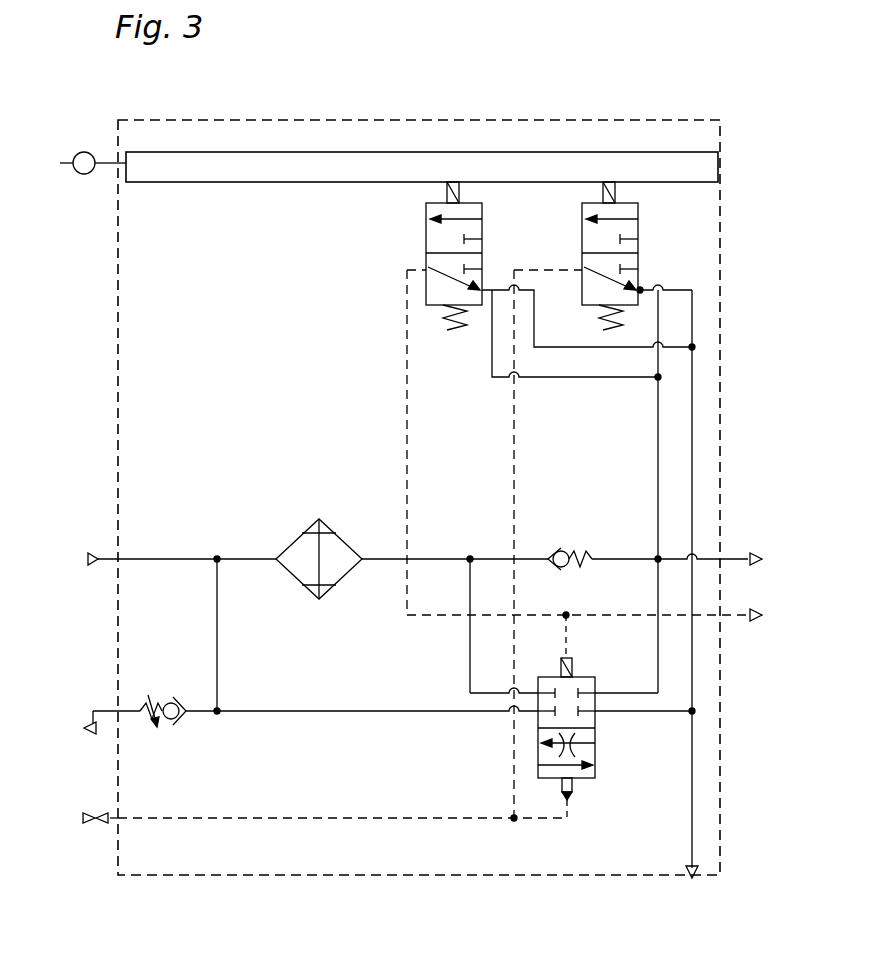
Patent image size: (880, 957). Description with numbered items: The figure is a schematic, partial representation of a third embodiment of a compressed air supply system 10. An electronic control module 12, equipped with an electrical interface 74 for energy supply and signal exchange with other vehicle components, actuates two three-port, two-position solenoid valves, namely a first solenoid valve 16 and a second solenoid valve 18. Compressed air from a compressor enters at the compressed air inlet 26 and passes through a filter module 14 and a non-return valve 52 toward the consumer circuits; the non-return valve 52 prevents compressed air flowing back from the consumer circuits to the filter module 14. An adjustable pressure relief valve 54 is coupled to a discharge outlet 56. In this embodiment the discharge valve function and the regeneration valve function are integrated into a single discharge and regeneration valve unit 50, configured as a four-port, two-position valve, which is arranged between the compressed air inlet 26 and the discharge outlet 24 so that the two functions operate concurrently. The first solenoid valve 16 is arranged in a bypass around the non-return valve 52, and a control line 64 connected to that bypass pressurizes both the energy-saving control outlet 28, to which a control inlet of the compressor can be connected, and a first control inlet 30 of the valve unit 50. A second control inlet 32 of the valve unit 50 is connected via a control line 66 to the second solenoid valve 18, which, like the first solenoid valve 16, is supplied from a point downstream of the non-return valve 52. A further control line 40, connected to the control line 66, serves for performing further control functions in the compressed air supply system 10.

The compressed air supply system 10 is at (437, 117).
The electronic control module 12 is at (290, 185).
The filter module 14 is at (300, 592).
The first solenoid valve 16 is at (640, 231).
The second solenoid valve 18 is at (426, 237).
The discharge outlet 24 is at (700, 881).
The compressed air inlet 26 is at (90, 553).
The energy-saving control outlet 28 is at (85, 826).
The first control inlet 30 is at (573, 795).
The second control inlet 32 is at (573, 668).
The further control line 40 is at (597, 612).
The discharge and regeneration valve unit 50 is at (598, 780).
The non-return valve 52 is at (556, 551).
The adjustable pressure relief valve 54 is at (176, 720).
The discharge outlet 56 is at (84, 736).
The control line 64 is at (517, 428).
The control line 66 is at (405, 440).
The electrical interface 74 is at (82, 153).